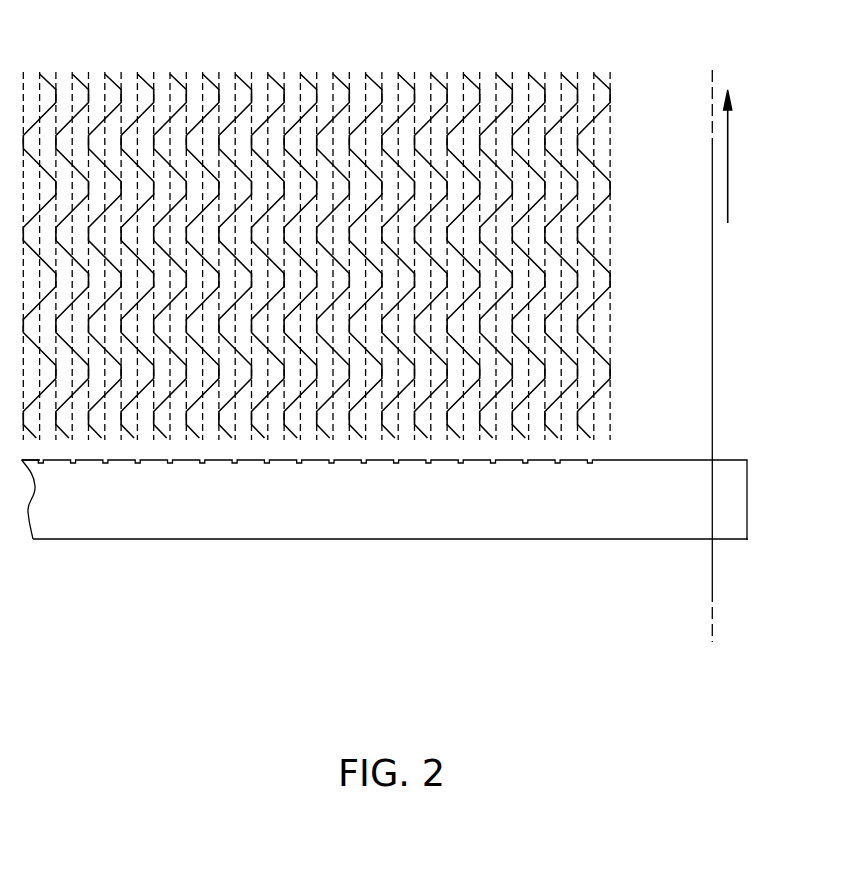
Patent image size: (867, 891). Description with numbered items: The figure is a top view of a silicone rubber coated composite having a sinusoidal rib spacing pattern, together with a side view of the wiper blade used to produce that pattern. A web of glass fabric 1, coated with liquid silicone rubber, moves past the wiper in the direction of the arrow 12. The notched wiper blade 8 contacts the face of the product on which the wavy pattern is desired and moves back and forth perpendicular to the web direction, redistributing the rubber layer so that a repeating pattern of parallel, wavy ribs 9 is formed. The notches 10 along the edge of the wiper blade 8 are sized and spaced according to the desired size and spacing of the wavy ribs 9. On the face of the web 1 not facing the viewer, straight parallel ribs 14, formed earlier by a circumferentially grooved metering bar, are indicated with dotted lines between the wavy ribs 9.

The web of glass fabric 1 is at (688, 350).
The notched wiper blade 8 is at (470, 518).
The wavy ribs 9 is at (434, 77).
The notches 10 is at (592, 462).
The arrow 12 is at (729, 146).
The straight parallel ribs 14 is at (155, 75).